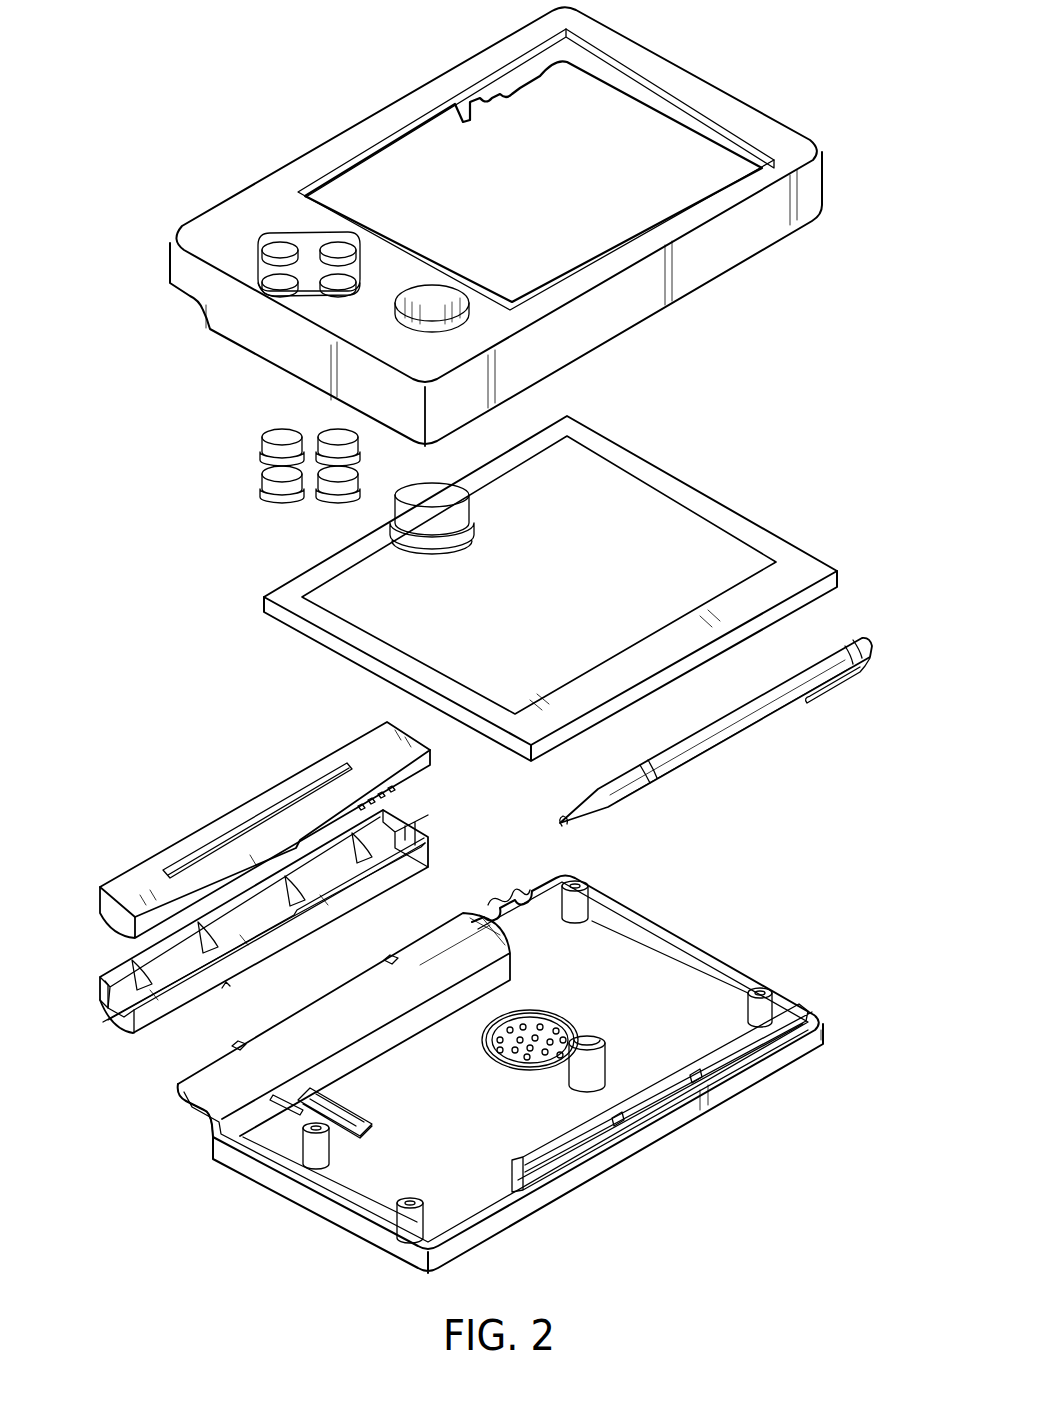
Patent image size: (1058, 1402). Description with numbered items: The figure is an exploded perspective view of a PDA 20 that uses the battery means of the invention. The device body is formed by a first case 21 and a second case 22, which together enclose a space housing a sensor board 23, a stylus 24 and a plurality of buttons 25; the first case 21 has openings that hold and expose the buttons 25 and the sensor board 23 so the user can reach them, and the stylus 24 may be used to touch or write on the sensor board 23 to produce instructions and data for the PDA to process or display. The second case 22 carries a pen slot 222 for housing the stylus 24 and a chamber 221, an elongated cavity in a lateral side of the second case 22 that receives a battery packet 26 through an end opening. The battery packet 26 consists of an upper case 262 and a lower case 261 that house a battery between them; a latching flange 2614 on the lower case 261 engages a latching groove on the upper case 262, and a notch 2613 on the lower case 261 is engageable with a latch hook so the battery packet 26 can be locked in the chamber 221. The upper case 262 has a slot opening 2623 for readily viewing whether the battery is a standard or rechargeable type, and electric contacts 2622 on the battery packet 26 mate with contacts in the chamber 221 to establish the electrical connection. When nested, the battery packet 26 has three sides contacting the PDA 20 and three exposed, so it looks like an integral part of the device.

The PDA 20 is at (808, 295).
The first case 21 is at (695, 270).
The second case 22 is at (612, 1170).
The chamber 221 is at (203, 1120).
The pen slot 222 is at (785, 1020).
The sensor board 23 is at (752, 537).
The stylus 24 is at (720, 738).
The buttons 25 is at (262, 482).
The battery packet 26 is at (102, 957).
The lower case 261 is at (123, 1017).
The notch 2613 is at (228, 985).
The latching flange 2614 is at (430, 832).
The upper case 262 is at (113, 885).
The electric contacts 2622 is at (400, 792).
The slot opening 2623 is at (300, 795).